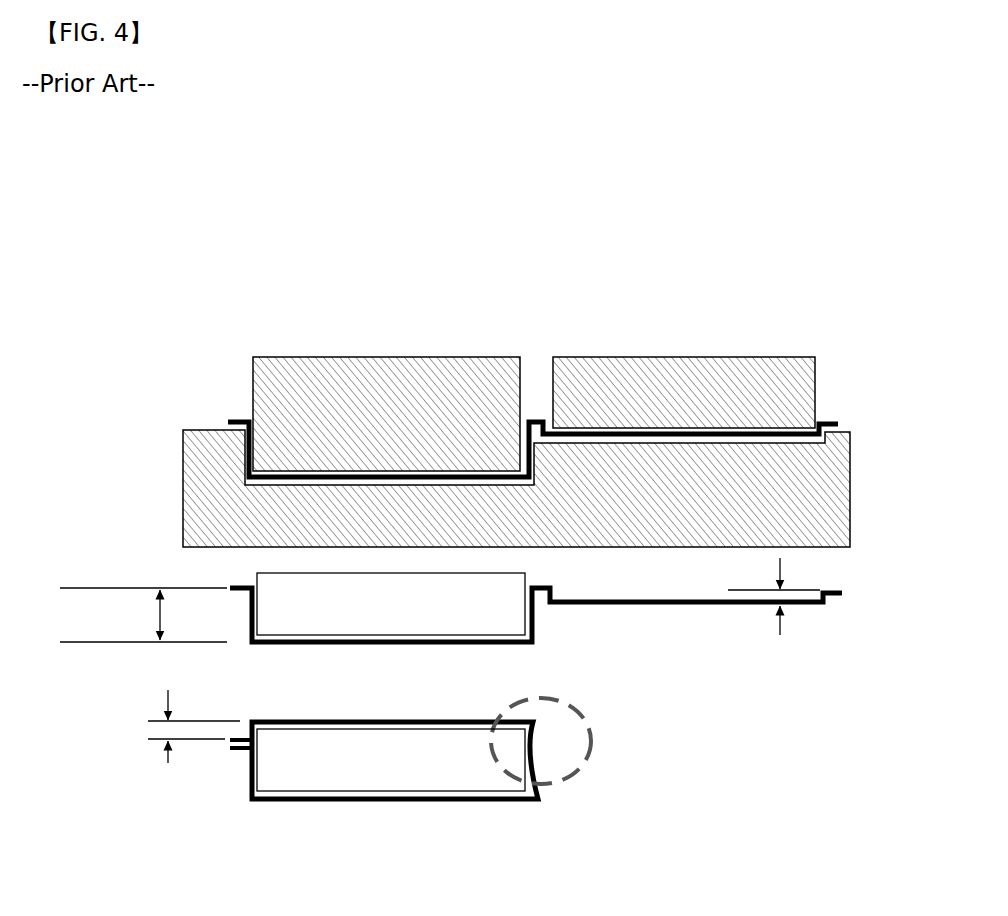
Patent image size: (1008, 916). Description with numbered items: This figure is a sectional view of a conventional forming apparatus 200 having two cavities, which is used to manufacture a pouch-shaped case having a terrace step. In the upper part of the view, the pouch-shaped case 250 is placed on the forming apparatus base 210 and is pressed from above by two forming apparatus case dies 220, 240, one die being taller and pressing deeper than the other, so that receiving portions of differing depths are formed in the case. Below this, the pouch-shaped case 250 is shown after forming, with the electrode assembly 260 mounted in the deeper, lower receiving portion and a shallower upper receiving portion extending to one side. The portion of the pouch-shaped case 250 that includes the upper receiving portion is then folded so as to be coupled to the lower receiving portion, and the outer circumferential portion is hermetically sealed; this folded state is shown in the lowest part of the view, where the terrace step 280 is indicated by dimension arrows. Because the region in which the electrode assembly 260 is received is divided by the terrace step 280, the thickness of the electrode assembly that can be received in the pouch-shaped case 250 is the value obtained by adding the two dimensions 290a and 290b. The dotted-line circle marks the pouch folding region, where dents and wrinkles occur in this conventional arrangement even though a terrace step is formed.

The conventional forming apparatus 200 is at (173, 340).
The forming apparatus base 210 is at (176, 505).
The forming apparatus case die 220 is at (408, 355).
The forming apparatus case die 240 is at (639, 355).
The pouch-shaped case 250 is at (843, 419).
The electrode assembly 260 is at (284, 630).
The terrace step 280 is at (194, 744).
The thickness of pouch-shaped case capable of receiving electrode assembly 290a is at (143, 615).
The thickness of pouch-shaped case capable of receiving electrode assembly 290b is at (774, 611).